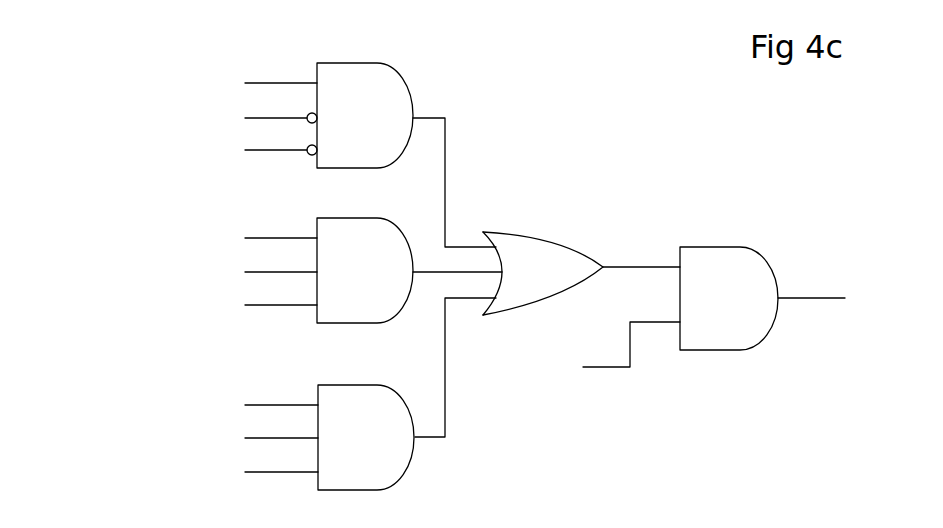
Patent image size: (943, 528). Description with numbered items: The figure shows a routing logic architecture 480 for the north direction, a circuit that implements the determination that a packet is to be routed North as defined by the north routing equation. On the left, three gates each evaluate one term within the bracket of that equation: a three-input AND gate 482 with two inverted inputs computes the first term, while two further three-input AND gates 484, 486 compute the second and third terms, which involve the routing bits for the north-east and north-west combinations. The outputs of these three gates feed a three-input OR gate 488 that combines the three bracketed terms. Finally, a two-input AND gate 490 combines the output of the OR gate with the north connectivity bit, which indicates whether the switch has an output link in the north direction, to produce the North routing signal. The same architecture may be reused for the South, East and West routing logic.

The routing logic architecture 480 is at (708, 421).
The three-input AND gate with two inverted inputs 482 is at (410, 68).
The three-input AND gate 484 is at (390, 215).
The three-input AND gate 486 is at (377, 383).
The three-input OR gate 488 is at (566, 238).
The two-input AND gate 490 is at (736, 229).